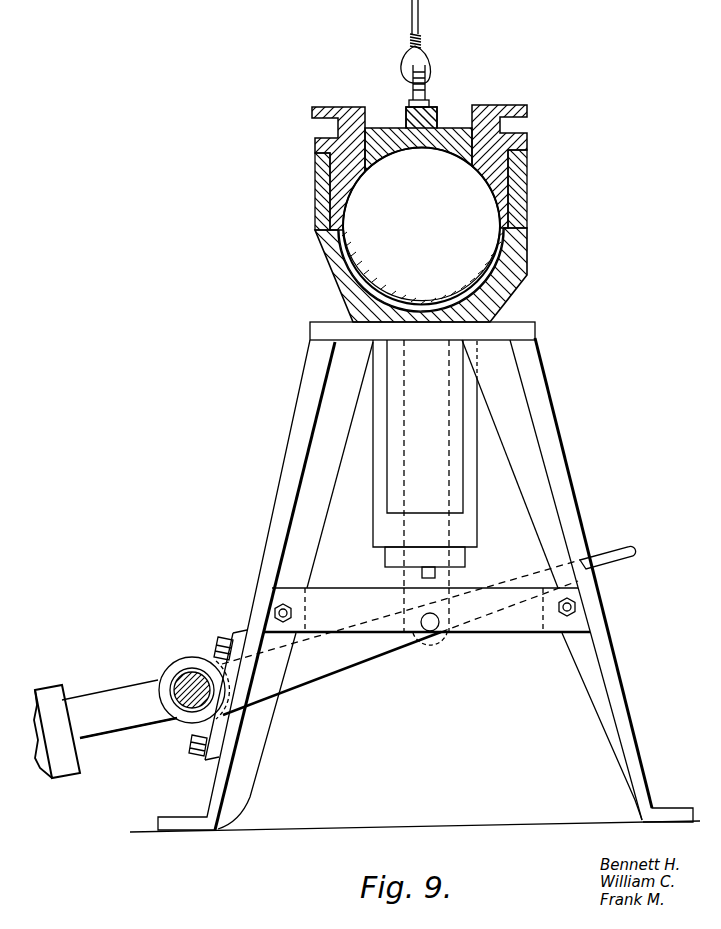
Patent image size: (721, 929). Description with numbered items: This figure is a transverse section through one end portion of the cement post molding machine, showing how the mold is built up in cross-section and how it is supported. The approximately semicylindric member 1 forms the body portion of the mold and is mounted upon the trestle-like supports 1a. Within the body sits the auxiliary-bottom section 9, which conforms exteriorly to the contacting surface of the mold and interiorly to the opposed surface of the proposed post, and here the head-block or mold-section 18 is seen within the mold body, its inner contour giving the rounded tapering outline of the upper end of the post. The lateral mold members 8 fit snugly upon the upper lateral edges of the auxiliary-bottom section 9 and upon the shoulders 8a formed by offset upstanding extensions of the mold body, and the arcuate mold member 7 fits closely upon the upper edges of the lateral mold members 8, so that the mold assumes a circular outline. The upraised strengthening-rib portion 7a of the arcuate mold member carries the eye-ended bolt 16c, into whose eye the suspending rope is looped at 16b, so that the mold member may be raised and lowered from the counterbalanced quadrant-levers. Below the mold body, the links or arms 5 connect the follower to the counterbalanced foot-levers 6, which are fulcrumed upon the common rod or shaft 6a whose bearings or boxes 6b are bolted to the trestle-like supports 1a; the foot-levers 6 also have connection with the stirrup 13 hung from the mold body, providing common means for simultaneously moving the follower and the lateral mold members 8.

The semicylindric member 1 is at (320, 282).
The trestle-like supports 1a is at (263, 578).
The links or arms 5 is at (412, 576).
The foot-levers 6 is at (307, 668).
The rod or shaft 6a is at (183, 710).
The bearings or boxes 6b is at (178, 663).
The arcuate mold member 7 is at (444, 148).
The strengthening-rib portion 7a is at (407, 112).
The lateral mold members 8 is at (509, 198).
The shoulders 8a is at (331, 231).
The auxiliary-bottom section 9 is at (413, 305).
The stirrup 13 is at (443, 486).
The loop 16b is at (399, 24).
The eye-ended bolt 16c is at (426, 90).
The head-block or mold-section 18 is at (421, 226).